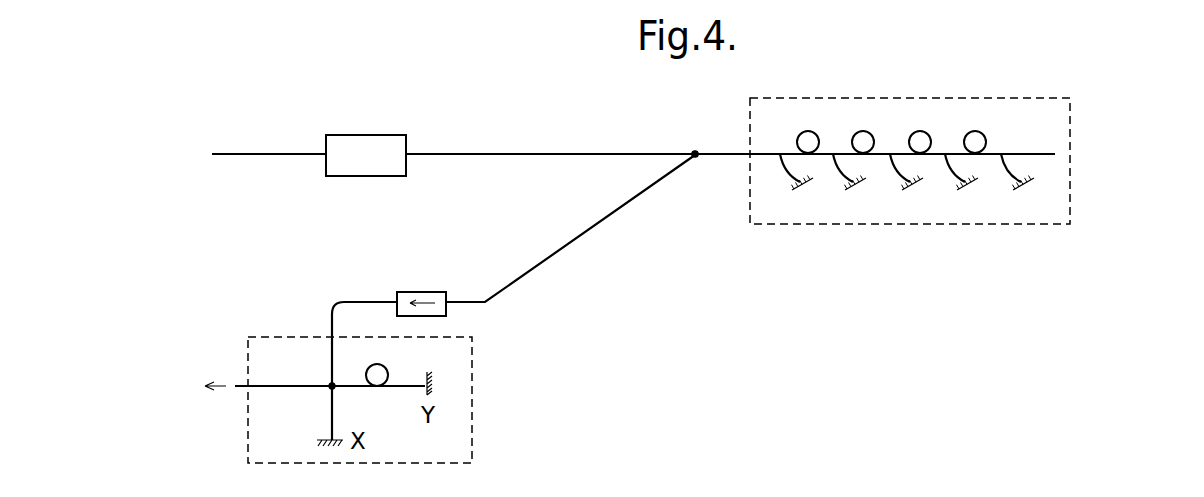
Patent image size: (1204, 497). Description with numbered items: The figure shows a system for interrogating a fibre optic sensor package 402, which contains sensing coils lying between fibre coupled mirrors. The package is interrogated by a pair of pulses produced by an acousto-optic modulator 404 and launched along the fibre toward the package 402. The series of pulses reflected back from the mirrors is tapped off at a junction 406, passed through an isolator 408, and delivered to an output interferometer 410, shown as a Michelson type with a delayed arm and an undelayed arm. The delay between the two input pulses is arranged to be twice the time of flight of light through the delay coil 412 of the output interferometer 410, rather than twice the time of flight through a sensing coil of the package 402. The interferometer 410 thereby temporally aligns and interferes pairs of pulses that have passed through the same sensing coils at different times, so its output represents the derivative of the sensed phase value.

The sensor package 402 is at (1070, 136).
The acousto-optic modulator 404 is at (338, 141).
The junction 406 is at (692, 150).
The isolator 408 is at (422, 293).
The output interferometer 410 is at (268, 337).
The delay coil 412 is at (373, 364).